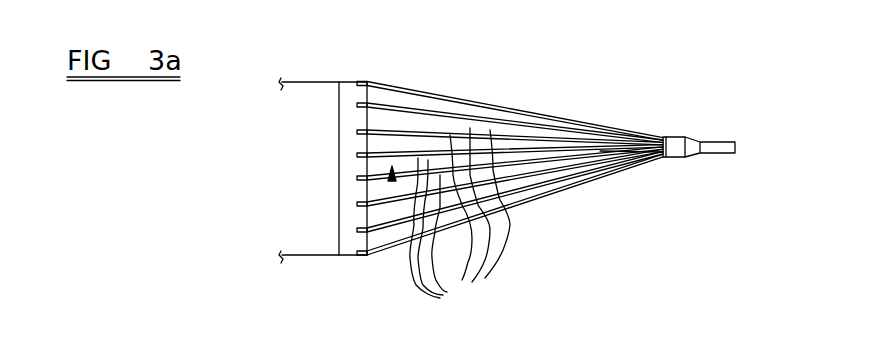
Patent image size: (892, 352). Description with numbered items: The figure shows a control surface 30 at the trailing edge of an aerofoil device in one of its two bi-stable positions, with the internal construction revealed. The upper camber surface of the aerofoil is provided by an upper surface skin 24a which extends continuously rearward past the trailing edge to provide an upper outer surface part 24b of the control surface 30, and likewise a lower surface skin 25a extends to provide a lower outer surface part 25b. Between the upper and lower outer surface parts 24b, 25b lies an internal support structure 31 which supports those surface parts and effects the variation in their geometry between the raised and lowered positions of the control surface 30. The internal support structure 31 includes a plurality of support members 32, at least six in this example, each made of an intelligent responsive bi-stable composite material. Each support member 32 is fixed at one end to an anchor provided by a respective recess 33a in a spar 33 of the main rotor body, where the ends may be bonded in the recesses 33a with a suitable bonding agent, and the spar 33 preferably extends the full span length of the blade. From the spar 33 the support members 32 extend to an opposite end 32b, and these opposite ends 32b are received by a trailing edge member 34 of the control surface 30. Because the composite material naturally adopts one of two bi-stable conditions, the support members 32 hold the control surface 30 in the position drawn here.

The upper surface skin 24a is at (323, 82).
The upper outer surface part 24b is at (448, 102).
The lower surface skin 25a is at (305, 257).
The lower outer surface part 25b is at (525, 203).
The control surface 30 is at (534, 92).
The internal support structure 31 is at (391, 182).
The support members 32 is at (460, 219).
The opposite end 32b is at (630, 158).
The spar 33 is at (358, 82).
The recess 33a is at (357, 155).
The trailing edge member 34 is at (675, 145).